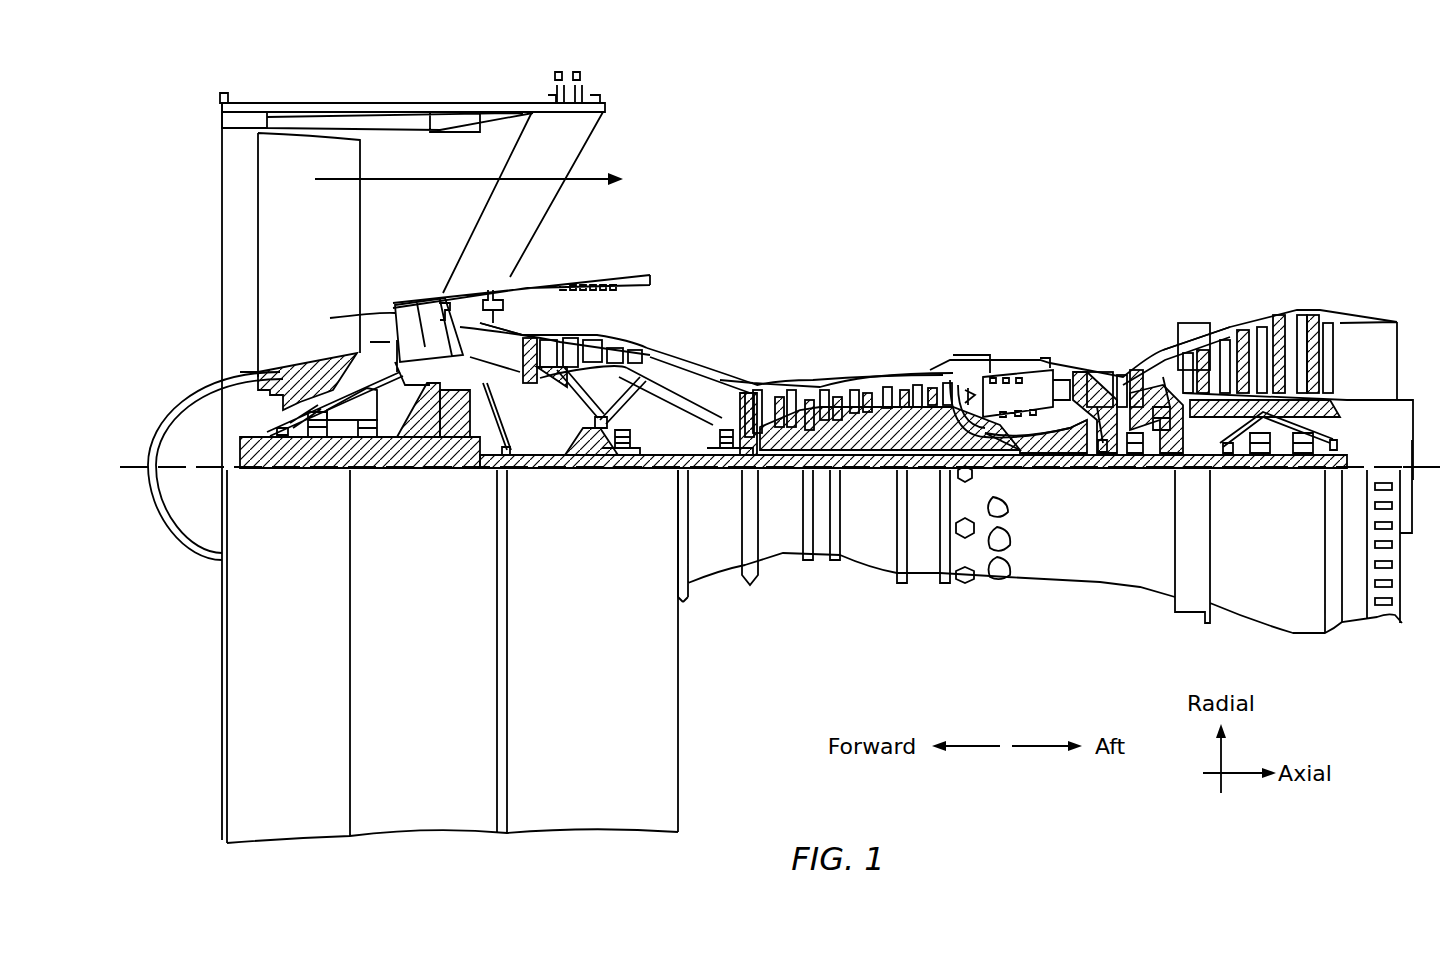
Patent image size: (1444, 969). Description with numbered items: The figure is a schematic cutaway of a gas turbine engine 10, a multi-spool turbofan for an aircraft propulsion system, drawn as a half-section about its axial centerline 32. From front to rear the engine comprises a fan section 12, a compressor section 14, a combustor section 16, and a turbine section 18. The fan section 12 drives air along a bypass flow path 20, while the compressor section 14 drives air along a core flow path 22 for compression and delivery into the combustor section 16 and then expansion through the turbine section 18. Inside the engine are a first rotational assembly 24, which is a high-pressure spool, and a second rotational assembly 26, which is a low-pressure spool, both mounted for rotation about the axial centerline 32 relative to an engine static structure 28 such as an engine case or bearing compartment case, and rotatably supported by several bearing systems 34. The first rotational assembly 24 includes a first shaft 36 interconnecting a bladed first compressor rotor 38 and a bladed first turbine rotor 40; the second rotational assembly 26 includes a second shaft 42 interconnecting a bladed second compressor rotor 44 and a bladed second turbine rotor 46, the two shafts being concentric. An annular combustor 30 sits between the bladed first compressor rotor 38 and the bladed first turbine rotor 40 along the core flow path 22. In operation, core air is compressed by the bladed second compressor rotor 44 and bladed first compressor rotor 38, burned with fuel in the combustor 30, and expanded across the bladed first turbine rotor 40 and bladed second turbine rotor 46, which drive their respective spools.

The gas turbine engine 10 is at (1198, 122).
The fan section 12 is at (500, 80).
The compressor section 14 is at (510, 237).
The combustor section 16 is at (955, 237).
The turbine section 18 is at (1330, 237).
The bypass flow path 20 is at (587, 174).
The core flow path 22 is at (713, 390).
The first rotational assembly 24 is at (895, 452).
The second rotational assembly 26 is at (1166, 485).
The engine static structure 28 is at (1133, 367).
The annular combustor 30 is at (1015, 397).
The axial centerline 32 is at (255, 474).
The bearing systems 34 is at (370, 437).
The first shaft 36 is at (1000, 460).
The bladed first compressor rotor 38 is at (890, 390).
The bladed first turbine rotor 40 is at (1080, 413).
The second shaft 42 is at (1083, 472).
The bladed second compressor rotor 44 is at (578, 348).
The bladed second turbine rotor 46 is at (1255, 370).